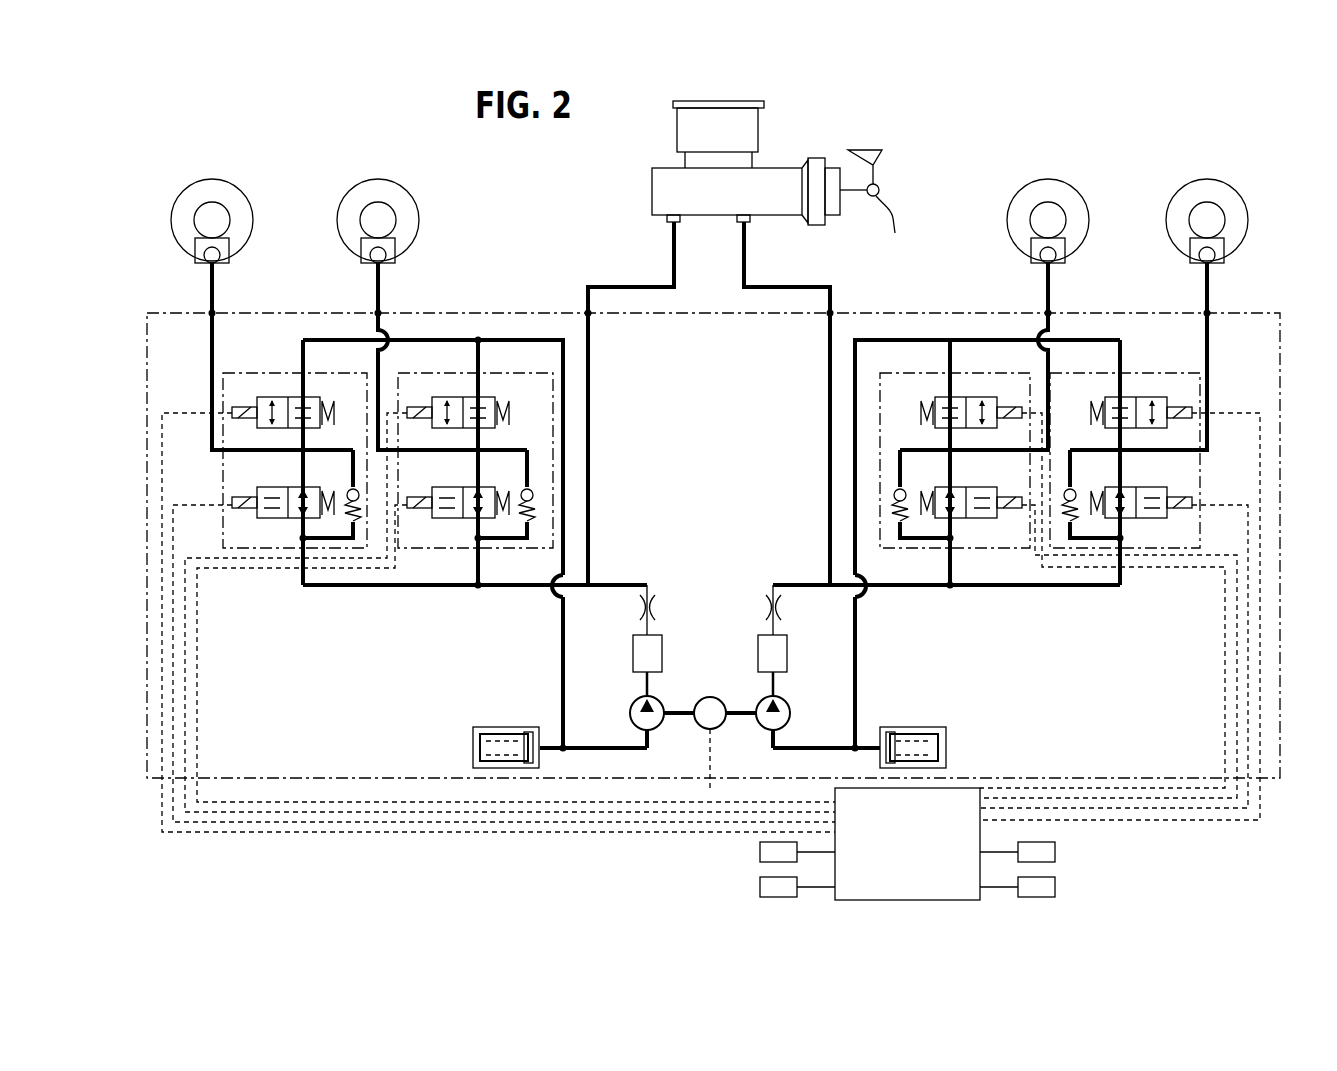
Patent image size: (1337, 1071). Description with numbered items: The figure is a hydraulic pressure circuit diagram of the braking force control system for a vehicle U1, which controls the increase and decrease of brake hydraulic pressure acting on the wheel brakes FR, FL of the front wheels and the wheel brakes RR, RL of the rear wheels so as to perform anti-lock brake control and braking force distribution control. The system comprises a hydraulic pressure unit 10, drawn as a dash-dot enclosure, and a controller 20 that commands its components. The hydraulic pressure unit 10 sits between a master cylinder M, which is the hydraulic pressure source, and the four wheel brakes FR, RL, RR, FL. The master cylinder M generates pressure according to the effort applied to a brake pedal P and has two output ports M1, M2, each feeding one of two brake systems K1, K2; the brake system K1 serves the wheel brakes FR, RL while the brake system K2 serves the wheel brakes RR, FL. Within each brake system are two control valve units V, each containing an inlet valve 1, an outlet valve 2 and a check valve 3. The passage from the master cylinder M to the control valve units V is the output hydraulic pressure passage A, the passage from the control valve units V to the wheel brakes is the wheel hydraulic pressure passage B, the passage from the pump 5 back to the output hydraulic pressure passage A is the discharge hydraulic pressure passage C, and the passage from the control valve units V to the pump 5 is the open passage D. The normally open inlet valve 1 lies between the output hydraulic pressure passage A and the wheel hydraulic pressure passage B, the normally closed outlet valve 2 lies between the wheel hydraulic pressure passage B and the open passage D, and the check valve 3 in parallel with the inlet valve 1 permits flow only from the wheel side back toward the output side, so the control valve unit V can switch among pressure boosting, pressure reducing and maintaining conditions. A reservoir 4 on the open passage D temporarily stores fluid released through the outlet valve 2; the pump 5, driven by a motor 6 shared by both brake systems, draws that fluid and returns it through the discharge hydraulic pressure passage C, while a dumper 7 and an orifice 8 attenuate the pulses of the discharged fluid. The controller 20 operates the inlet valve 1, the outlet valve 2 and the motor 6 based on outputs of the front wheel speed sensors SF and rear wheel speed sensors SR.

The inlet valve 1 is at (268, 519).
The outlet valve 2 is at (312, 397).
The check valve 3 is at (349, 490).
The reservoir 4 is at (472, 750).
The pump 5 is at (658, 727).
The motor 6 is at (710, 697).
The dumper 7 is at (632, 658).
The orifice 8 is at (658, 600).
The hydraulic pressure unit 10 is at (1281, 316).
The controller 20 is at (894, 836).
The master cylinder M is at (660, 190).
The output port M1 is at (662, 220).
The output port M2 is at (752, 225).
The brake pedal P is at (897, 220).
The braking force control system for a vehicle U1 is at (916, 135).
The brake system K1 is at (296, 312).
The brake system K2 is at (1108, 312).
The wheel brake FR is at (213, 179).
The wheel brake RL is at (379, 179).
The wheel brake RR is at (1049, 179).
The wheel brake FL is at (1208, 179).
The output hydraulic pressure passage A is at (592, 380).
The wheel hydraulic pressure passage B is at (214, 343).
The discharge hydraulic pressure passage C is at (592, 580).
The open passage D is at (478, 338).
The control valve unit V is at (223, 482).
The front wheel speed sensor SF is at (760, 853).
The rear wheel speed sensor SR is at (760, 888).